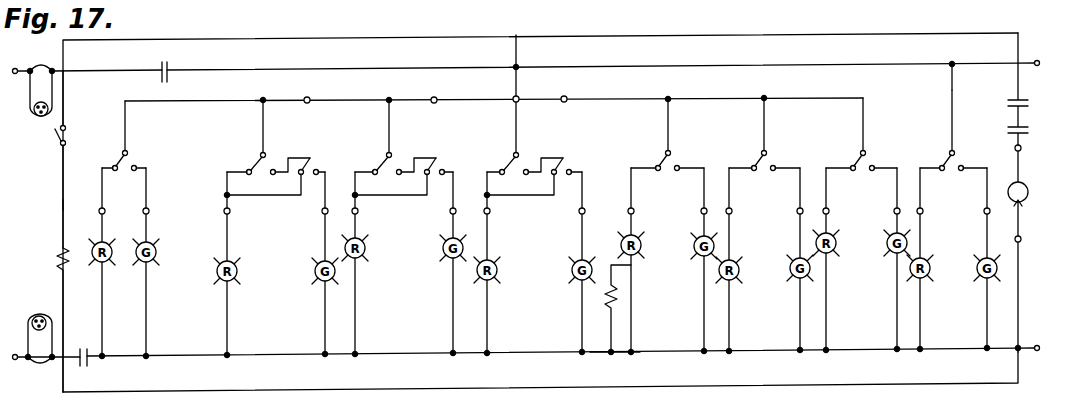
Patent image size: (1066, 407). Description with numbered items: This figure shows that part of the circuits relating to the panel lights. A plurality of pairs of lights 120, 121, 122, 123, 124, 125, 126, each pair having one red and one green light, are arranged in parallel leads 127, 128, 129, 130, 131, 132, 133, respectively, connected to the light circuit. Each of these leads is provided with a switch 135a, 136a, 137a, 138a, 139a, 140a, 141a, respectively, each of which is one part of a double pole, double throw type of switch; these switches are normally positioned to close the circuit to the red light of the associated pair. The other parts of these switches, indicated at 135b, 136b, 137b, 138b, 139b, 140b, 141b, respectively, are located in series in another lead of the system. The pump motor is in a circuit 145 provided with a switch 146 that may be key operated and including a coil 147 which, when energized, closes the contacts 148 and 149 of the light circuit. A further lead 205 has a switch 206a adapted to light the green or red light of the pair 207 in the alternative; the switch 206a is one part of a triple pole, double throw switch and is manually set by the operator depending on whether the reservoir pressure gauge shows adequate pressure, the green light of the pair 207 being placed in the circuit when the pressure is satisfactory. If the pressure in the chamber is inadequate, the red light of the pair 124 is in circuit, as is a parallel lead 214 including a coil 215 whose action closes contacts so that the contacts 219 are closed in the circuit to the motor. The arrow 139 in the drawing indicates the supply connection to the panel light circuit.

The pair of lights 120 is at (132, 235).
The pair of lights 121 is at (299, 255).
The pair of lights 122 is at (436, 238).
The pair of lights 123 is at (549, 243).
The pair of lights 124 is at (684, 230).
The pair of lights 125 is at (780, 226).
The pair of lights 126 is at (876, 225).
The parallel lead 127 is at (127, 137).
The parallel lead 128 is at (262, 138).
The parallel lead 129 is at (388, 133).
The parallel lead 130 is at (516, 128).
The parallel lead 131 is at (667, 135).
The parallel lead 132 is at (762, 130).
The parallel lead 133 is at (862, 124).
The switch 135a is at (124, 168).
The switch 136a is at (303, 158).
The switch 137a is at (418, 154).
The switch 138a is at (507, 165).
The switch 139a is at (667, 160).
The switch 140a is at (762, 154).
The switch 141a is at (862, 157).
The switch part 135b is at (135, 2).
The switch part 136b is at (298, 12).
The switch part 137b is at (372, 1).
The switch part 138b is at (504, 1).
The switch part 139b is at (664, 8).
The switch part 140b is at (752, 8).
The switch part 141b is at (844, 8).
The supply conductor 139 is at (922, 75).
The circuit 145 is at (61, 203).
The switch 146 is at (54, 140).
The coil 147 is at (58, 257).
The contacts 148 is at (89, 361).
The contacts 149 is at (172, 66).
The lead 205 is at (951, 133).
The switch 206a is at (953, 158).
The pair of lights 207 is at (972, 248).
The parallel lead 214 is at (611, 336).
The coil 215 is at (613, 309).
The contacts 219 is at (1025, 108).